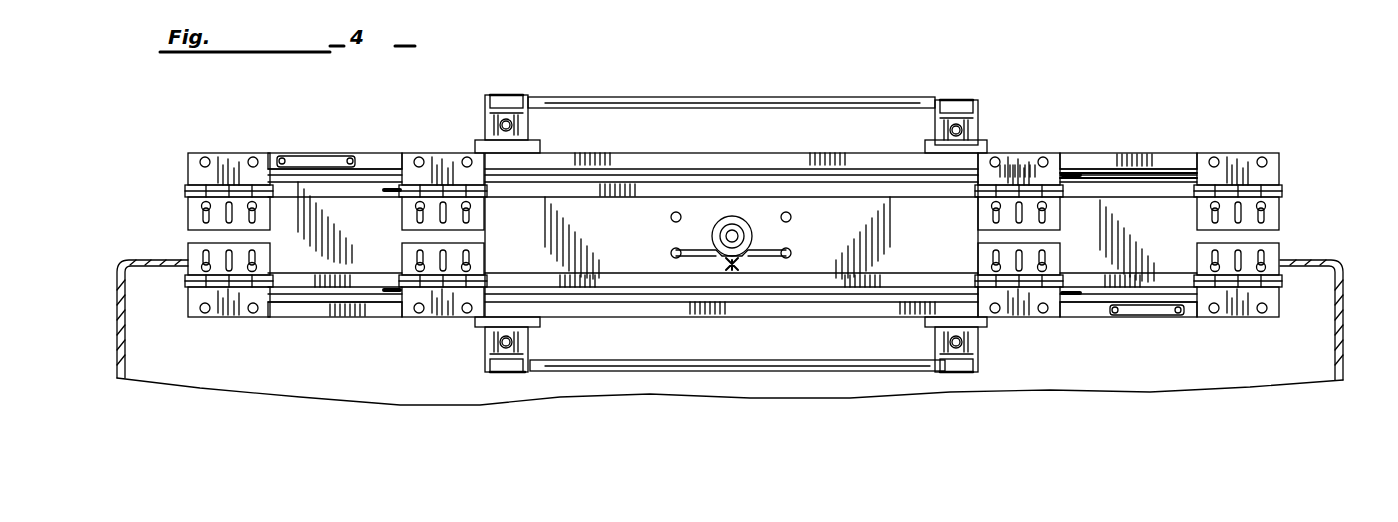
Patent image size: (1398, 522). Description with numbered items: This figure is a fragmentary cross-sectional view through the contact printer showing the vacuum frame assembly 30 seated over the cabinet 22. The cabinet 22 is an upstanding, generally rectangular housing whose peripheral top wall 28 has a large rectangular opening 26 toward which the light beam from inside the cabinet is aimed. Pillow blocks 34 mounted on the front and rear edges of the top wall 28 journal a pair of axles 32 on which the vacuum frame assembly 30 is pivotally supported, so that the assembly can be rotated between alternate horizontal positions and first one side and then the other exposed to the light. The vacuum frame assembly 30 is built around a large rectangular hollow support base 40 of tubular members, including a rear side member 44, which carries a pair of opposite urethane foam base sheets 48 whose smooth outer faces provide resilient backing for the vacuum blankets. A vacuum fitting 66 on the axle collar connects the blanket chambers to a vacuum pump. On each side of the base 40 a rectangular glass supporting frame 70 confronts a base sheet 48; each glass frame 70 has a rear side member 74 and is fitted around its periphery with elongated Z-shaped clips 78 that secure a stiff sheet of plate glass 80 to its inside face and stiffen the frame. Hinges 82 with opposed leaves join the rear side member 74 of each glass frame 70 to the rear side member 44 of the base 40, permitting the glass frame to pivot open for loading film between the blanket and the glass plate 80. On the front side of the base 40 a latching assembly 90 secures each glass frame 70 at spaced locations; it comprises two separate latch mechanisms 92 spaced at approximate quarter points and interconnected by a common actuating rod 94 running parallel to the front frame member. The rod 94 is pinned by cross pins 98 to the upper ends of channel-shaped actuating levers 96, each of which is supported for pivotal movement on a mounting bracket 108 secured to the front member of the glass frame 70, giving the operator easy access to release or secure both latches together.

The cabinet 22 is at (1348, 345).
The opening 26 is at (1292, 262).
The top wall 28 is at (145, 262).
The vacuum frame assembly 30 is at (1284, 212).
The axle 32 is at (735, 228).
The pillow block 34 is at (728, 228).
The support base 40 is at (1125, 182).
The rear side member 44 is at (646, 245).
The base sheet 48 is at (1165, 190).
The vacuum fitting 66 is at (730, 264).
The glass supporting frame 70 is at (1072, 150).
The rear side member 74 is at (385, 160).
The clip 78 is at (396, 288).
The plate glass 80 is at (348, 166).
The hinge 82 is at (222, 165).
The latching assembly 90 is at (728, 100).
The latch mechanism 92 is at (520, 98).
The actuating rod 94 is at (875, 105).
The actuating lever 96 is at (530, 120).
The cross pin 98 is at (505, 97).
The mounting bracket 108 is at (522, 147).